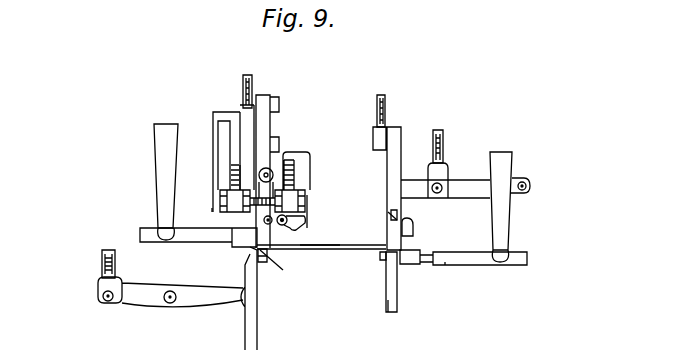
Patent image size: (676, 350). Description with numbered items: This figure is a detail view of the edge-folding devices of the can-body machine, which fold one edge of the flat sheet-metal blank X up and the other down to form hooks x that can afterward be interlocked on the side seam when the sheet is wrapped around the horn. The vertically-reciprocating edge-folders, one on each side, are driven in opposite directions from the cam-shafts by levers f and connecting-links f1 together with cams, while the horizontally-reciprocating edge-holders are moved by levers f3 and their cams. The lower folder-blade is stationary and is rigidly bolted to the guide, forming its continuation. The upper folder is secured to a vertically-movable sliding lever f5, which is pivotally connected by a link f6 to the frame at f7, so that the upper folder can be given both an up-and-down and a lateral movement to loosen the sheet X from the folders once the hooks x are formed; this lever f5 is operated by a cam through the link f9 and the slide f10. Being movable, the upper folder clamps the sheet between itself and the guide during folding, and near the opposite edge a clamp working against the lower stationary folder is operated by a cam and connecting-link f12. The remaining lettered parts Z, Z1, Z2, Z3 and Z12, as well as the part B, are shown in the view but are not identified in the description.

The lever f is at (146, 289).
The connecting-link f1 is at (105, 250).
The lever f3 is at (157, 151).
The vertically-movable lever f5 is at (278, 168).
The link f6 is at (279, 226).
The pivot on frame f7 is at (288, 220).
The link f9 is at (253, 83).
The slide f10 is at (262, 126).
The connecting-link f12 is at (386, 106).
The hook x is at (254, 249).
The sheet-metal blank X is at (320, 234).
The bracket Z is at (414, 228).
The base block Z1 is at (205, 228).
The slide piece Z2 is at (263, 251).
The pin Z3 is at (394, 216).
The stop Z12 is at (383, 258).
The lower bar B is at (388, 309).